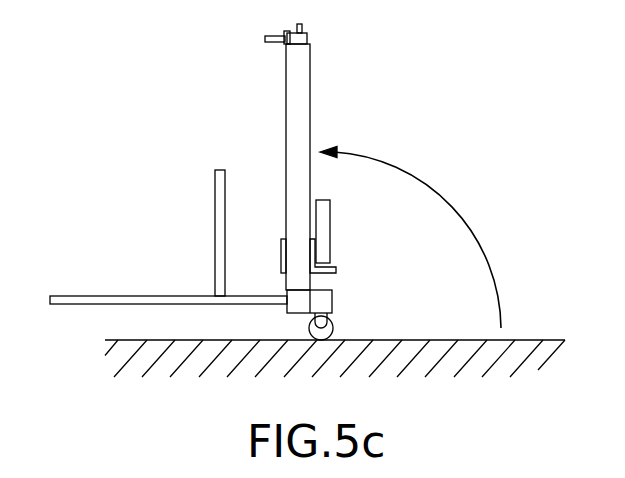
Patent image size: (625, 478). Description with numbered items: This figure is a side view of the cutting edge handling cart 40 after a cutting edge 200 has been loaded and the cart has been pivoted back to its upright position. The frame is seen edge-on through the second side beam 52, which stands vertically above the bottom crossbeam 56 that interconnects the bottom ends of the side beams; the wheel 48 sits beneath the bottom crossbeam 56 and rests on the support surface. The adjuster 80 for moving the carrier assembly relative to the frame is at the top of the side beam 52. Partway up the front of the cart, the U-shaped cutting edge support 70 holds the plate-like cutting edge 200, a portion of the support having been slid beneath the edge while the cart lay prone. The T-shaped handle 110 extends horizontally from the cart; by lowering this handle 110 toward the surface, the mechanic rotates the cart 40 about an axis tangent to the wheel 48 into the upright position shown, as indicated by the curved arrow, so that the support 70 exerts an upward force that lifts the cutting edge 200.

The cutting edge handling cart 40 is at (232, 93).
The wheel 48 is at (333, 328).
The second side beam 52 is at (295, 88).
The bottom crossbeam 56 is at (333, 296).
The cutting edge support 70 is at (336, 268).
The adjuster 80 is at (305, 32).
The handle 110 is at (122, 296).
The cutting edge 200 is at (330, 207).